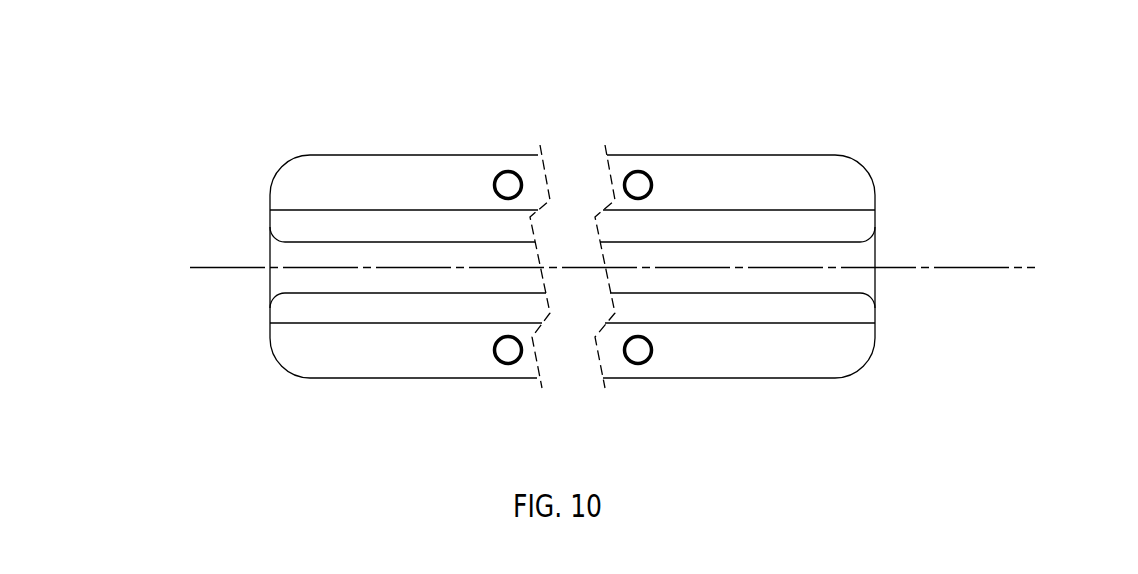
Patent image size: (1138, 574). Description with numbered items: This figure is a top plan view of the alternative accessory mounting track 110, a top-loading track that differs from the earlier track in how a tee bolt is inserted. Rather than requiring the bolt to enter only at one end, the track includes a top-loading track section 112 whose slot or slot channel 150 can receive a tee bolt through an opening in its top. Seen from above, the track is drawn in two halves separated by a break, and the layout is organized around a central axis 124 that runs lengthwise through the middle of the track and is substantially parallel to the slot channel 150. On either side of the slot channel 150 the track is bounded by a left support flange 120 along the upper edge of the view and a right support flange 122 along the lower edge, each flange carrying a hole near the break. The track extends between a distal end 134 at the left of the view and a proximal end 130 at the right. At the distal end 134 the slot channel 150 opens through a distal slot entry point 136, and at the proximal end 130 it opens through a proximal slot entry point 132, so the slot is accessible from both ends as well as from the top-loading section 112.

The alternative accessory mounting track 110 is at (848, 117).
The top-loading track section 112 is at (703, 147).
The left support flange 120 is at (315, 178).
The right support flange 122 is at (315, 358).
The central axis 124 is at (940, 265).
The proximal end 130 is at (902, 307).
The proximal slot entry point 132 is at (862, 280).
The distal end 134 is at (240, 220).
The distal slot entry point 136 is at (285, 250).
The slot channel 150 is at (322, 275).